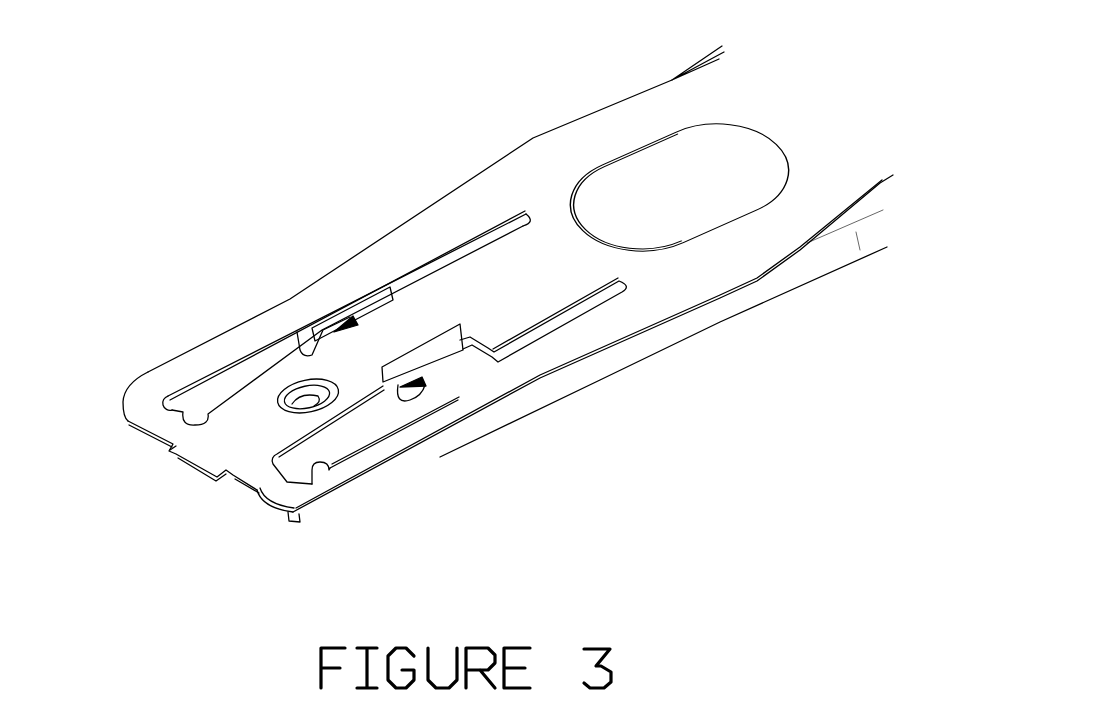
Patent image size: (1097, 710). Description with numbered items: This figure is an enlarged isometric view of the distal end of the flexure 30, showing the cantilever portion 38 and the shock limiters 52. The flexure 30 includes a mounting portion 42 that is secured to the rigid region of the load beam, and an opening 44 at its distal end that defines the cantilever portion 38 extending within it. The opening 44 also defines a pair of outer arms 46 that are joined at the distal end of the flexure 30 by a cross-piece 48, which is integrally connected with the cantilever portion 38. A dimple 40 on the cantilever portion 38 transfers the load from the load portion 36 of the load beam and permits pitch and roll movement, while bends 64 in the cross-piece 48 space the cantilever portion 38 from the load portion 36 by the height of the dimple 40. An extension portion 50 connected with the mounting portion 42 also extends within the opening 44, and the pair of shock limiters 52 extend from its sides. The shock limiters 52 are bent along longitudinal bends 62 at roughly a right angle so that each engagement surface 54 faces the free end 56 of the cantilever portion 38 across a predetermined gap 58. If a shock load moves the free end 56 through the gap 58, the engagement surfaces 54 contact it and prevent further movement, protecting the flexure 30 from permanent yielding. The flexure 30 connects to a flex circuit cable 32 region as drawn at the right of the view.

The flexure 30 is at (498, 178).
The flex circuit cable 32 is at (797, 275).
The load portion 36 is at (347, 447).
The cantilever portion 38 is at (230, 412).
The dimple 40 is at (283, 400).
The mounting portion 42 is at (668, 97).
The opening 44 is at (328, 463).
The outer arms 46 is at (163, 378).
The cross-piece 48 is at (177, 440).
The extension portion 50 is at (505, 292).
The shock limiters 52 is at (345, 320).
The engagement surface 54 is at (297, 330).
The free end 56 is at (442, 314).
The gap 58 is at (375, 326).
The longitudinal bends 62 is at (352, 321).
The bends 64 is at (162, 428).